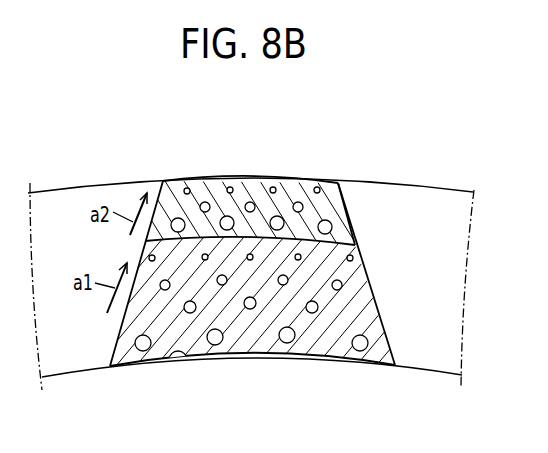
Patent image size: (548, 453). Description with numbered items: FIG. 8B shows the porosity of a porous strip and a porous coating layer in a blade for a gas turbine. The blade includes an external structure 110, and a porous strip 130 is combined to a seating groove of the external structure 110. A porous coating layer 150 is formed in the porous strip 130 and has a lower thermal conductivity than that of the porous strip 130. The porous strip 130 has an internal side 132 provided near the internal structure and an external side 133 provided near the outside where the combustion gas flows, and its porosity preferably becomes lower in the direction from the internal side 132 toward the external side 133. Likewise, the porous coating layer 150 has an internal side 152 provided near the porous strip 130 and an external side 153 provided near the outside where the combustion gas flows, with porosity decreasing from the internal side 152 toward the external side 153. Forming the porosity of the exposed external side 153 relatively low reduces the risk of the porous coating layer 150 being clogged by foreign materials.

The external structure 110 is at (440, 212).
The porous strip 130 is at (238, 362).
The internal side 132 is at (167, 362).
The external side 133 is at (332, 243).
The porous coating layer 150 is at (263, 197).
The internal side 152 is at (332, 243).
The external side 153 is at (245, 183).